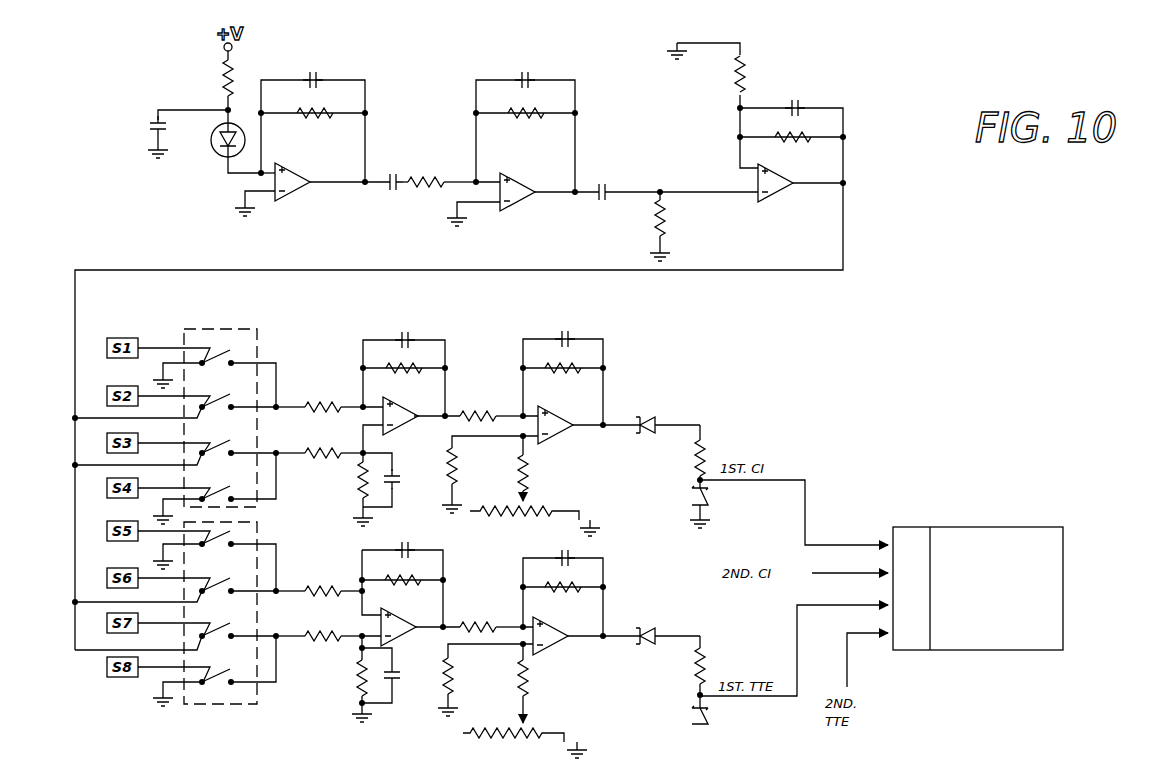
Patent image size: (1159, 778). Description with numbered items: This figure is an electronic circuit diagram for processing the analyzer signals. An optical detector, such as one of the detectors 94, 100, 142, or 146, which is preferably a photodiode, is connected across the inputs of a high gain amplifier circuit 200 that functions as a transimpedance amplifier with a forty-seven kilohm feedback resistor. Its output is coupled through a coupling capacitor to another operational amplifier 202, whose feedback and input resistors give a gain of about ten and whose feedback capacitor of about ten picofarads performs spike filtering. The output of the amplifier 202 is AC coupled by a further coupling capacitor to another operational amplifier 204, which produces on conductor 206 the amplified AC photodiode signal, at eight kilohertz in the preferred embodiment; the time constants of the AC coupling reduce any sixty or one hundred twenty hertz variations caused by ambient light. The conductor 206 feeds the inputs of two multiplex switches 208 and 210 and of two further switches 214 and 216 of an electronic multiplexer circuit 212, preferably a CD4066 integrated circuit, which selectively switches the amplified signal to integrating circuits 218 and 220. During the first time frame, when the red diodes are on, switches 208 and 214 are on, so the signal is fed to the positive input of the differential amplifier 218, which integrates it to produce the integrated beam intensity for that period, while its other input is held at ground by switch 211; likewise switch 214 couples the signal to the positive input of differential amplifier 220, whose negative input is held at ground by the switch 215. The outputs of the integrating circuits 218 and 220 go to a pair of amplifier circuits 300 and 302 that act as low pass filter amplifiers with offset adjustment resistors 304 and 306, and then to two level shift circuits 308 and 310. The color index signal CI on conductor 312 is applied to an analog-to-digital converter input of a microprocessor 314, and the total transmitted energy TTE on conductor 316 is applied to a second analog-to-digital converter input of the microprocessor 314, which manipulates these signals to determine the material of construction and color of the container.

The detector 94 is at (178, 171).
The detector 100 is at (178, 171).
The detector 142 is at (178, 171).
The detector 146 is at (212, 153).
The high gain amplifier circuit 200 is at (290, 202).
The operational amplifier 202 is at (516, 210).
The operational amplifier 204 is at (776, 203).
The conductor 206 is at (843, 243).
The multiplex switch 208 is at (175, 395).
The multiplex switch 210 is at (175, 442).
The switch 211 is at (207, 488).
The electronic multiplexer circuit 212 is at (193, 498).
The switch 214 is at (175, 577).
The switch 215 is at (207, 671).
The switch 216 is at (175, 624).
The integrating circuit 218 is at (428, 334).
The integrating circuit 220 is at (428, 544).
The amplifier circuit 300 is at (591, 334).
The amplifier circuit 302 is at (568, 654).
The offset adjustment resistor 304 is at (522, 516).
The offset adjustment resistor 306 is at (514, 740).
The level shift circuit 308 is at (648, 421).
The level shift circuit 310 is at (647, 632).
The conductor 312 is at (805, 508).
The microprocessor 314 is at (915, 527).
The conductor 316 is at (797, 667).